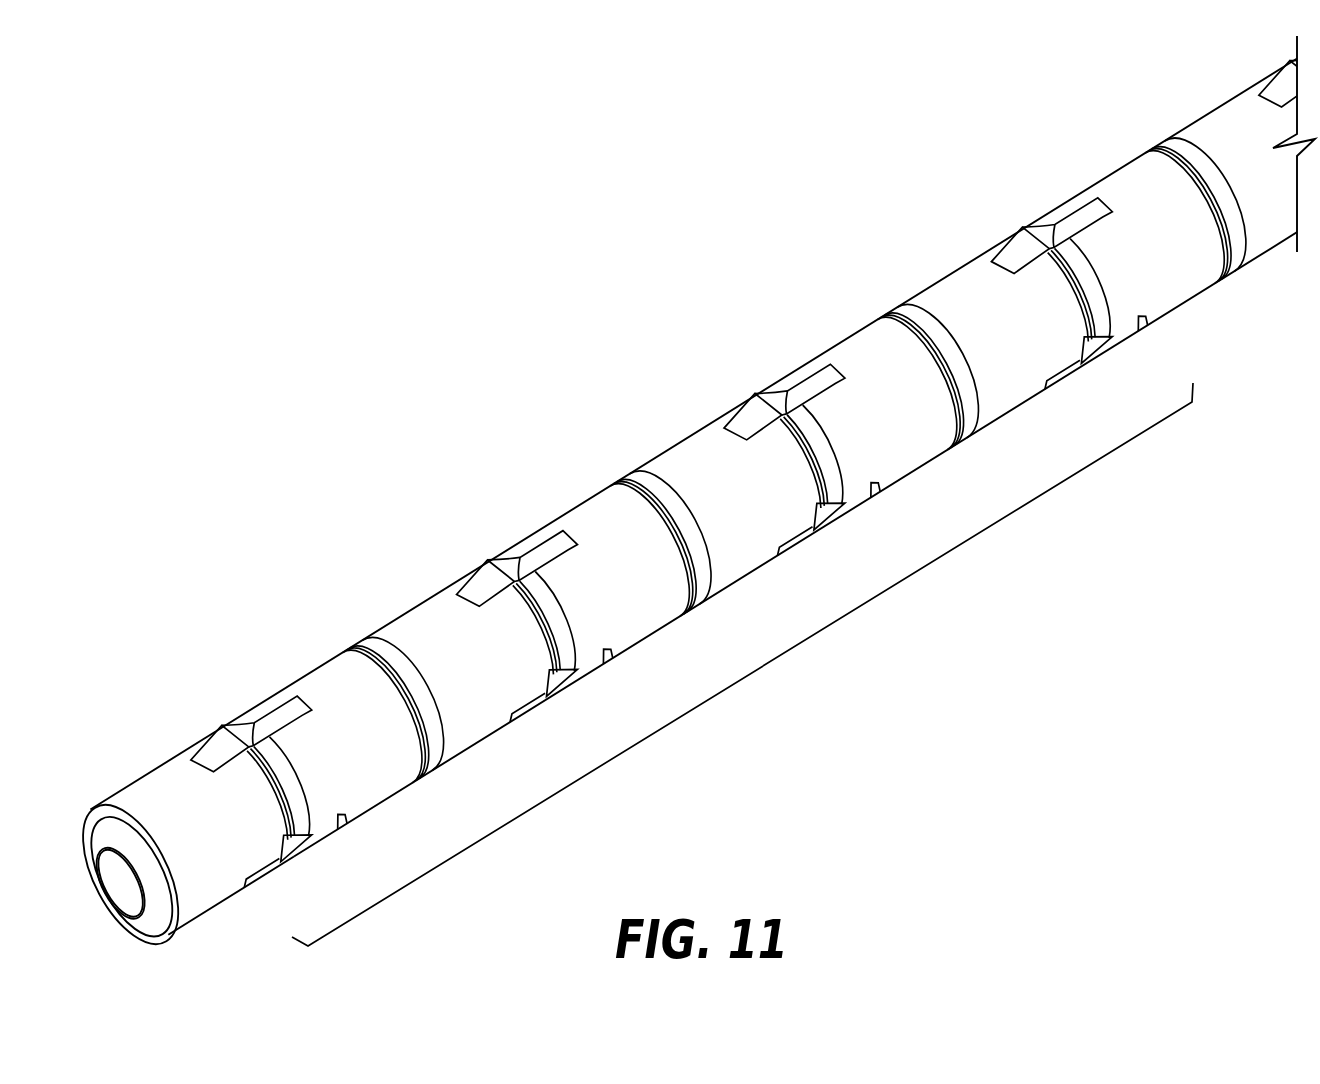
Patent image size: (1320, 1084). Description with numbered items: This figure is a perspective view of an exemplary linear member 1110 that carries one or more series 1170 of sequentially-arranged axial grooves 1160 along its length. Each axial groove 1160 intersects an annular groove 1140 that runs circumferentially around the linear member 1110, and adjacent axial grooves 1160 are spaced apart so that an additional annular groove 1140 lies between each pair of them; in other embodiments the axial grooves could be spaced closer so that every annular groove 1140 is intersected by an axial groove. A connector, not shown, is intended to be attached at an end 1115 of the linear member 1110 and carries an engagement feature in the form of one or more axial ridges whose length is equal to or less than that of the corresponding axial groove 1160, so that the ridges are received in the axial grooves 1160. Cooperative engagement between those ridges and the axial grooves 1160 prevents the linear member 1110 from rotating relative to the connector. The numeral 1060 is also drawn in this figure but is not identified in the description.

The linear member 1110 is at (289, 284).
The end 1115 is at (160, 709).
The annular groove 1140 is at (355, 638).
The axial groove 1160 is at (273, 722).
The flat / notch 1060 is at (530, 718).
The series 1170 is at (193, 778).